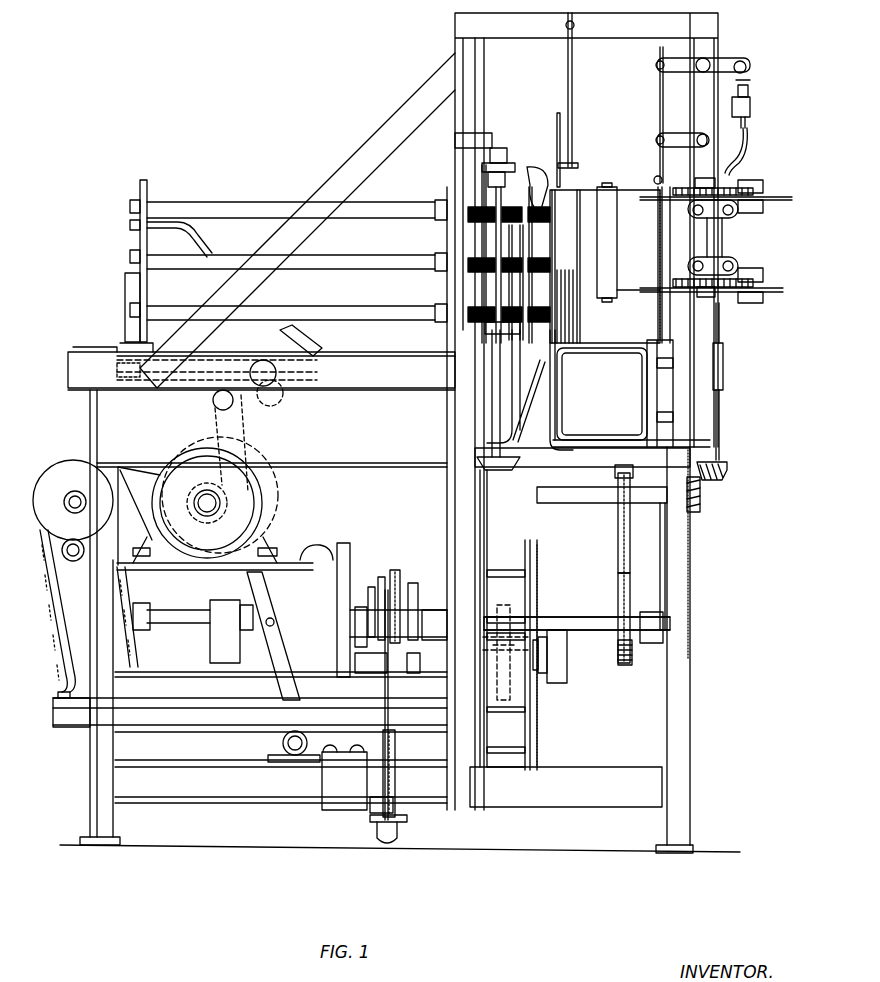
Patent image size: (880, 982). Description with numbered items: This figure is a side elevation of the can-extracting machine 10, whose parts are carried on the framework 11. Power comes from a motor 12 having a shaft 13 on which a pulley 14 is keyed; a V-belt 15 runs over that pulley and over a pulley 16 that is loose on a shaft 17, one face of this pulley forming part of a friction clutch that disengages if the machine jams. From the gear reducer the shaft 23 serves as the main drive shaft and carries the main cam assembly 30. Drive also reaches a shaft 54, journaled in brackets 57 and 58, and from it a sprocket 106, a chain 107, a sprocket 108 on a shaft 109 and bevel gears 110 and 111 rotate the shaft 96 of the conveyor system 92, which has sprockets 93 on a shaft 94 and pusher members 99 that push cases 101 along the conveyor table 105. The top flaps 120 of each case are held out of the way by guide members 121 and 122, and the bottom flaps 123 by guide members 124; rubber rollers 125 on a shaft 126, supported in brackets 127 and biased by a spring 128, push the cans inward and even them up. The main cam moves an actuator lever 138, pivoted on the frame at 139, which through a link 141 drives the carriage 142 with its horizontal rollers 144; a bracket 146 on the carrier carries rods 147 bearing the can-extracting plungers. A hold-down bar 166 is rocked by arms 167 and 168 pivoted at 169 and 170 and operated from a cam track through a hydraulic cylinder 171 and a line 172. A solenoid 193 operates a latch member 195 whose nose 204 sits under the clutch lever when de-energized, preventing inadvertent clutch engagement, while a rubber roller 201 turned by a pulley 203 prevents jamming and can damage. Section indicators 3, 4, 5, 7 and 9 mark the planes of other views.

The section line 3- 3 is at (353, 838).
The section line 4- 4 is at (265, 578).
The section line 5- 5 is at (180, 515).
The section line 7- 7 is at (202, 330).
The section line 9- 9 is at (503, 783).
The machine 10 is at (742, 549).
The framework 11 is at (691, 620).
The motor 12 is at (264, 500).
The shaft 13 is at (202, 490).
The pulley 14 is at (236, 466).
The V-belt 15 is at (155, 468).
The pulley 16 is at (66, 493).
The shaft 17 is at (68, 508).
The shaft 23 is at (196, 635).
The main cam assembly 30 is at (330, 548).
The shaft 54 is at (590, 617).
The bracket 57 is at (428, 585).
The bracket 58 is at (655, 612).
The conveyor system 92 is at (748, 236).
The sprockets 93 is at (733, 182).
The shaft 94 is at (730, 256).
The shaft 96 is at (722, 420).
The pusher members 99 is at (617, 222).
The cases 101 is at (625, 333).
The conveyor table 105 is at (634, 362).
The sprocket 106 is at (616, 663).
The chain 107 is at (620, 568).
The sprocket 108 is at (616, 520).
The shaft 109 is at (660, 510).
The bevel gear 110 is at (700, 510).
The bevel gear 111 is at (725, 480).
The top flaps 120 is at (557, 120).
The guide member 121 is at (544, 172).
The guide member 122 is at (578, 165).
The bottom flaps 123 is at (556, 404).
The guide members 124 is at (530, 375).
The rubber rollers 125 is at (468, 215).
The shaft 126 is at (505, 292).
The brackets 127 is at (494, 147).
The spring 128 is at (510, 160).
The actuator lever 138 is at (290, 636).
The pivot 139 is at (296, 756).
The link 141 is at (240, 405).
The carriage 142 is at (300, 372).
The horizontal rollers 144 is at (117, 370).
The bracket 146 is at (144, 182).
The rods 147 is at (248, 200).
The hold-down bar 166 is at (656, 176).
The arm 167 is at (725, 58).
The arm 168 is at (664, 130).
The pivot 169 is at (707, 58).
The pivot 170 is at (678, 150).
The hydraulic cylinder 171 is at (750, 95).
The line 172 is at (748, 142).
The solenoid 193 is at (362, 792).
The latch member 195 is at (372, 808).
The rubber roller 201 is at (513, 690).
The pulley 203 is at (567, 675).
The nose 204 is at (397, 836).